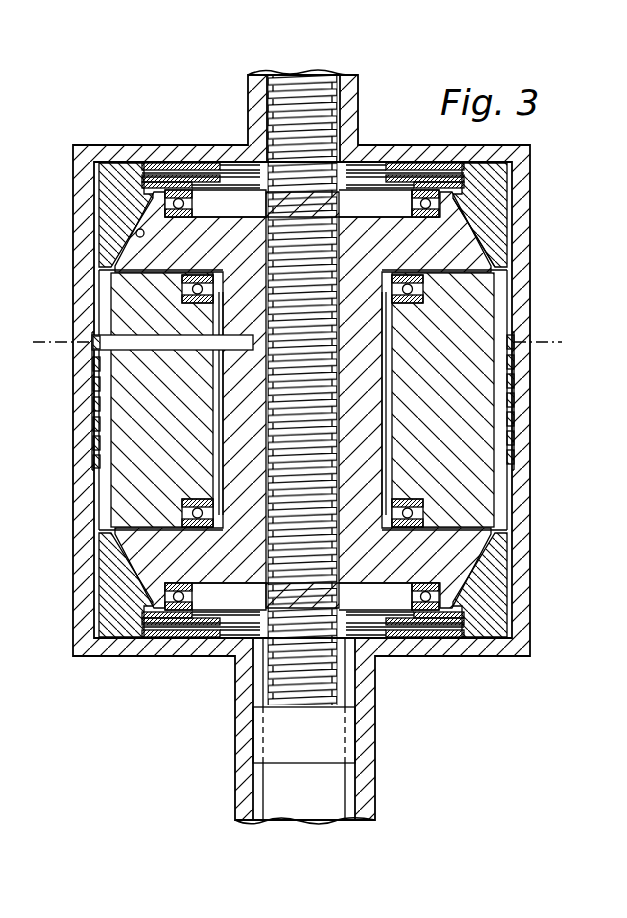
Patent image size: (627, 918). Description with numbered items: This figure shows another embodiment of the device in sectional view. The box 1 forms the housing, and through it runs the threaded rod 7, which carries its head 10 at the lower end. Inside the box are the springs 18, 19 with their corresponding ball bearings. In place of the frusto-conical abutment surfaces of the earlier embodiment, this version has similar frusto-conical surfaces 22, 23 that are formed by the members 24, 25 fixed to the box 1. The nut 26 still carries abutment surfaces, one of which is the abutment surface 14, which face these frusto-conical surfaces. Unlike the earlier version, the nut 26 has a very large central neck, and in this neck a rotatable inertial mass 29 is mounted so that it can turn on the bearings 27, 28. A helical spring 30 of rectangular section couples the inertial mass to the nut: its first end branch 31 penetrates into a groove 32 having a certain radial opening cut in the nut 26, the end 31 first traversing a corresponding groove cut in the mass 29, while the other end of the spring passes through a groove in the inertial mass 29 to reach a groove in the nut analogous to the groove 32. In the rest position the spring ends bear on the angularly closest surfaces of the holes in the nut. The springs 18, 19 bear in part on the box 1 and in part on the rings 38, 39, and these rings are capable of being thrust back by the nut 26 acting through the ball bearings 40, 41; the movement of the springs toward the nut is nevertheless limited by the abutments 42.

The box 1 is at (520, 288).
The threaded rod 7 is at (337, 685).
The head 10 is at (333, 740).
The abutment surface 14 is at (142, 585).
The spring 18 is at (163, 220).
The spring 19 is at (175, 185).
The frusto-conical surface 22 is at (490, 563).
The frusto-conical surface 23 is at (478, 232).
The member 24 is at (500, 607).
The member 25 is at (492, 202).
The nut 26 is at (447, 540).
The bearing 27 is at (180, 302).
The bearing 28 is at (180, 502).
The inertial mass 29 is at (472, 487).
The helical spring 30 is at (513, 393).
The first end branch 31 is at (148, 344).
The groove 32 is at (236, 368).
The ring 38 is at (397, 188).
The ring 39 is at (217, 607).
The ball bearing 40 is at (403, 592).
The ball bearing 41 is at (100, 202).
The abutment 42 is at (463, 195).